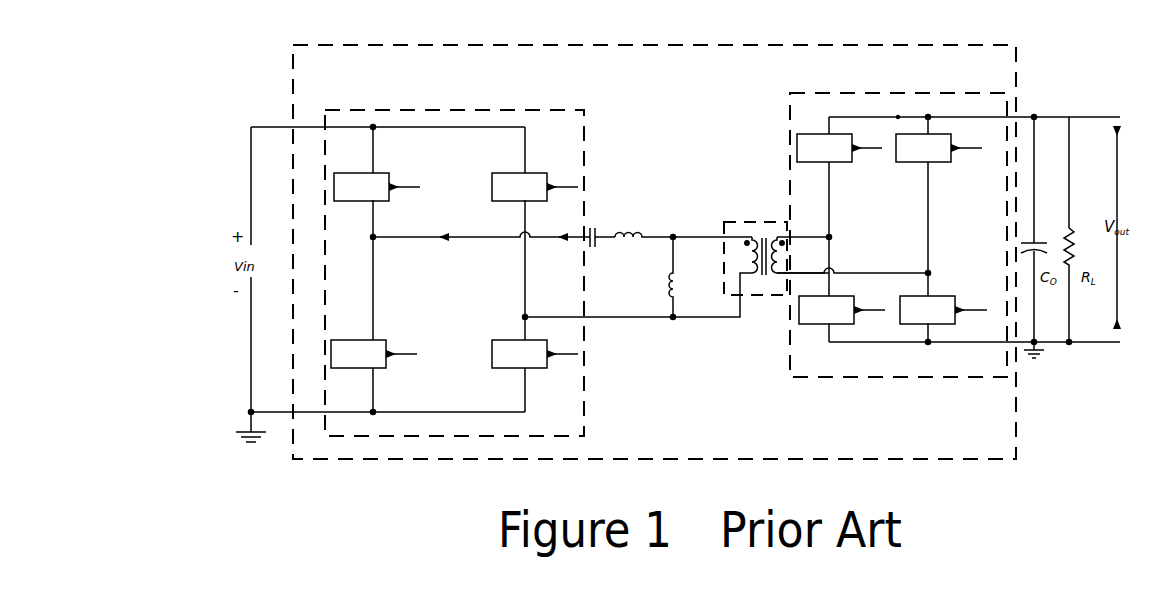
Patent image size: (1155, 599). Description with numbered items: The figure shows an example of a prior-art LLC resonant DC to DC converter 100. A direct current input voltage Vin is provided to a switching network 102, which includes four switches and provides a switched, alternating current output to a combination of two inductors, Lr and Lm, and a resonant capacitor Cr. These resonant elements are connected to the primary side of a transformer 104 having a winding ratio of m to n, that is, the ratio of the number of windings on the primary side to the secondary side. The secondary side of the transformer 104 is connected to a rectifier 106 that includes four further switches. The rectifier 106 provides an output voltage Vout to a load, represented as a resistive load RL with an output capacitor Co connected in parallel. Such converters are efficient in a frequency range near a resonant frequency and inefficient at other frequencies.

The LLC resonant DC to DC converter 100 is at (692, 45).
The switching network 102 is at (515, 110).
The transformer 104 is at (763, 222).
The rectifier 106 is at (850, 93).